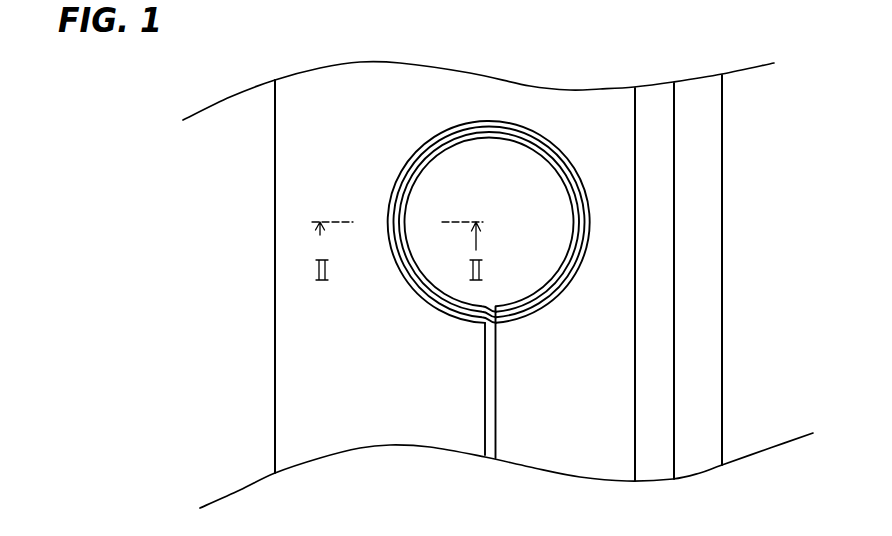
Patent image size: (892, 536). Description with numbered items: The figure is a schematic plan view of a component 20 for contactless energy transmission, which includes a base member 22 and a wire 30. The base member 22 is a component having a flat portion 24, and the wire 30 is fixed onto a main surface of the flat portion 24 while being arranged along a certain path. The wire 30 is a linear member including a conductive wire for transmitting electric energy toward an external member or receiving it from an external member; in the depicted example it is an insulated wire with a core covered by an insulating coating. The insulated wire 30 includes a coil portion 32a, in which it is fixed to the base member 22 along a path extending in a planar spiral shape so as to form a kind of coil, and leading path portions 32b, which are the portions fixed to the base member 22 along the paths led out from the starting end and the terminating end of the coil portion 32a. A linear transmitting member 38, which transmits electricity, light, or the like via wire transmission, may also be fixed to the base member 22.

The component for contactless energy transmission 20 is at (534, 59).
The base member 22 is at (354, 78).
The flat portion 24 is at (478, 90).
The wire 30 is at (562, 298).
The coil portion 32a is at (575, 165).
The leading path portions 32b is at (497, 397).
The linear transmitting member 38 is at (655, 82).